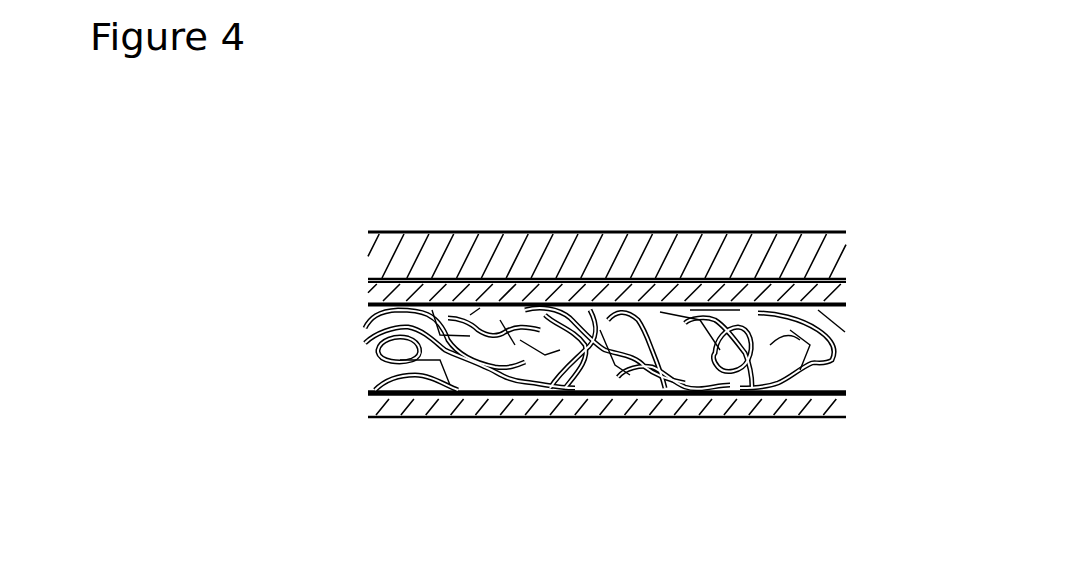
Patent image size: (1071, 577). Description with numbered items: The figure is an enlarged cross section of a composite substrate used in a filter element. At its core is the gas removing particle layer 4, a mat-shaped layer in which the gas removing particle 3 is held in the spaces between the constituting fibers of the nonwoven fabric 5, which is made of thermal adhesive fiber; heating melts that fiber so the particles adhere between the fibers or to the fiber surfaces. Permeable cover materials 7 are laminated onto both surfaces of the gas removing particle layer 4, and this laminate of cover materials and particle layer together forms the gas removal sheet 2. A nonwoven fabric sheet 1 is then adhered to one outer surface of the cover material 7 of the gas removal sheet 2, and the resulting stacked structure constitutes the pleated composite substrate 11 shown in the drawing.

The pleated composite substrate 11 is at (843, 176).
The nonwoven fabric sheet 1 is at (832, 232).
The gas removal sheet 2 is at (860, 420).
The gas removing particle 3 is at (584, 372).
The gas removing particle layer 4 is at (643, 480).
The nonwoven fabric 5 is at (643, 392).
The permeable cover material 7 is at (378, 410).